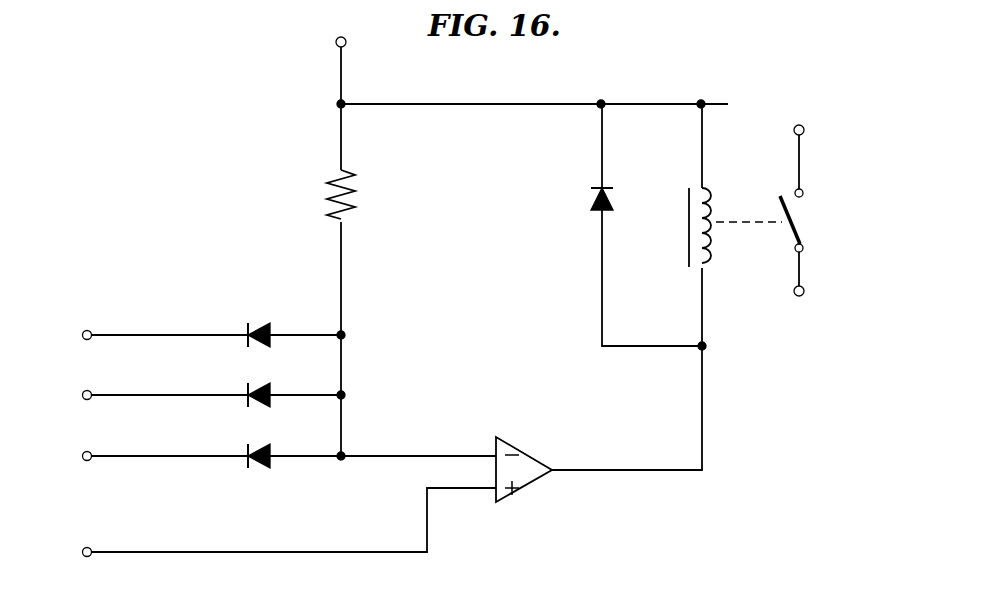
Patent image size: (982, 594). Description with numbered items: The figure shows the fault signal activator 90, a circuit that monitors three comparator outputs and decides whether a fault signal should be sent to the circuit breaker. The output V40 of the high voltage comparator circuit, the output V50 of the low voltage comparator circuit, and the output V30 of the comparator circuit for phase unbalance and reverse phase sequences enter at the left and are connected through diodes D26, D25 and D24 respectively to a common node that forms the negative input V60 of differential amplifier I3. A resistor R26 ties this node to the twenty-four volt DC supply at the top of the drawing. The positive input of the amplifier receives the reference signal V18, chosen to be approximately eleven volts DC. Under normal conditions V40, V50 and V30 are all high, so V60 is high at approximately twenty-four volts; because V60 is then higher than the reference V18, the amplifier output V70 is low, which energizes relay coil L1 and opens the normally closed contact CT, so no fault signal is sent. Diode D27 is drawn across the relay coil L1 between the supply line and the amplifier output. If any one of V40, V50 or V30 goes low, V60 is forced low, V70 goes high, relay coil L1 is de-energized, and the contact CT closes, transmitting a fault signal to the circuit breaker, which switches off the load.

The fault signal activator 90 is at (228, 202).
The resistor R26 is at (367, 194).
The diode D24 is at (279, 448).
The diode D25 is at (279, 386).
The diode D26 is at (279, 326).
The diode D27 is at (646, 225).
The relay coil L1 is at (713, 239).
The differential amplifier I3 is at (524, 483).
The output of the high voltage comparator circuit V40 is at (192, 335).
The output of the low voltage comparator circuit V50 is at (192, 395).
The output of the comparator circuit for phase unbalance and reverse phase sequences V30 is at (270, 457).
The reference signal V18 is at (270, 528).
The negative input of differential amplifier V60 is at (451, 437).
The differential amplifier output V70 is at (627, 287).